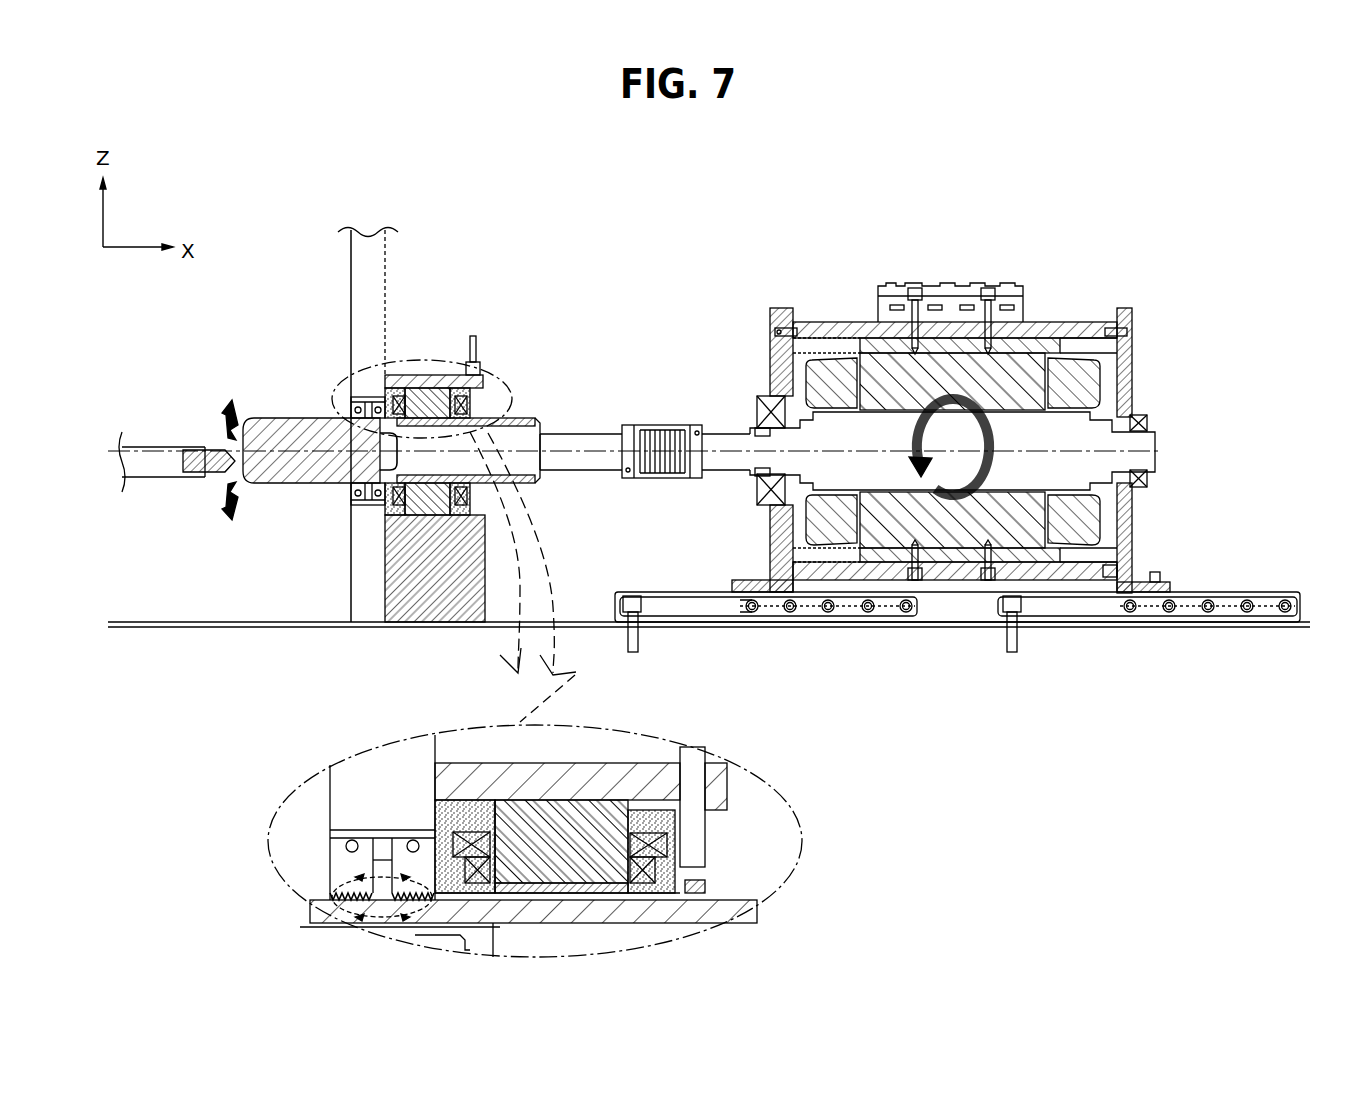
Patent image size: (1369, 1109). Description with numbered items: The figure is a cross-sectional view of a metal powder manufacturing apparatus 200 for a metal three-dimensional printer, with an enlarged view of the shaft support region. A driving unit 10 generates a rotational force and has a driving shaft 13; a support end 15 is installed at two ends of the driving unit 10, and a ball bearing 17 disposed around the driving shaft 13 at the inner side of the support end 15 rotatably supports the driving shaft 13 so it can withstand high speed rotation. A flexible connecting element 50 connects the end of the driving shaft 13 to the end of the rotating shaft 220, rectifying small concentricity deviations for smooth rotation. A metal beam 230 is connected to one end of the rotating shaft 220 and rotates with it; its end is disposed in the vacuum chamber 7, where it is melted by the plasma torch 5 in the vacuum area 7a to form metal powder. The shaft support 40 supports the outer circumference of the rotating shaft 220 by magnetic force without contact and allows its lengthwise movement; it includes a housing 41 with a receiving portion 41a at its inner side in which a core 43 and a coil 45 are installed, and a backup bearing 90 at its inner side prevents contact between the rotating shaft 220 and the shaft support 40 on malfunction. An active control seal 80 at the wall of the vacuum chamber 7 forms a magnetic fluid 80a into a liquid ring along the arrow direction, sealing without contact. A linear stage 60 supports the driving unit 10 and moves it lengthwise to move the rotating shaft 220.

The metal powder manufacturing apparatus 200 is at (1170, 160).
The vacuum area 7a is at (235, 281).
The vacuum chamber 7 is at (382, 272).
The plasma torch 5 is at (148, 447).
The metal beam 230 is at (302, 418).
The rotating shaft 220 is at (549, 417).
The flexible connecting element 50 is at (660, 425).
The driving shaft 13 is at (720, 434).
The driving unit 10 is at (1040, 294).
The support end 15 is at (785, 308).
The ball bearing 17 is at (762, 407).
The linear stage 60 is at (1226, 586).
The shaft support 40 is at (438, 362).
The housing 41 is at (456, 372).
The receiving portion 41a is at (500, 812).
The core 43 is at (526, 581).
The coil 45 is at (420, 386).
The active control seal 80 is at (356, 494).
The magnetic fluid 80a is at (330, 897).
The backup bearing 90 is at (610, 903).